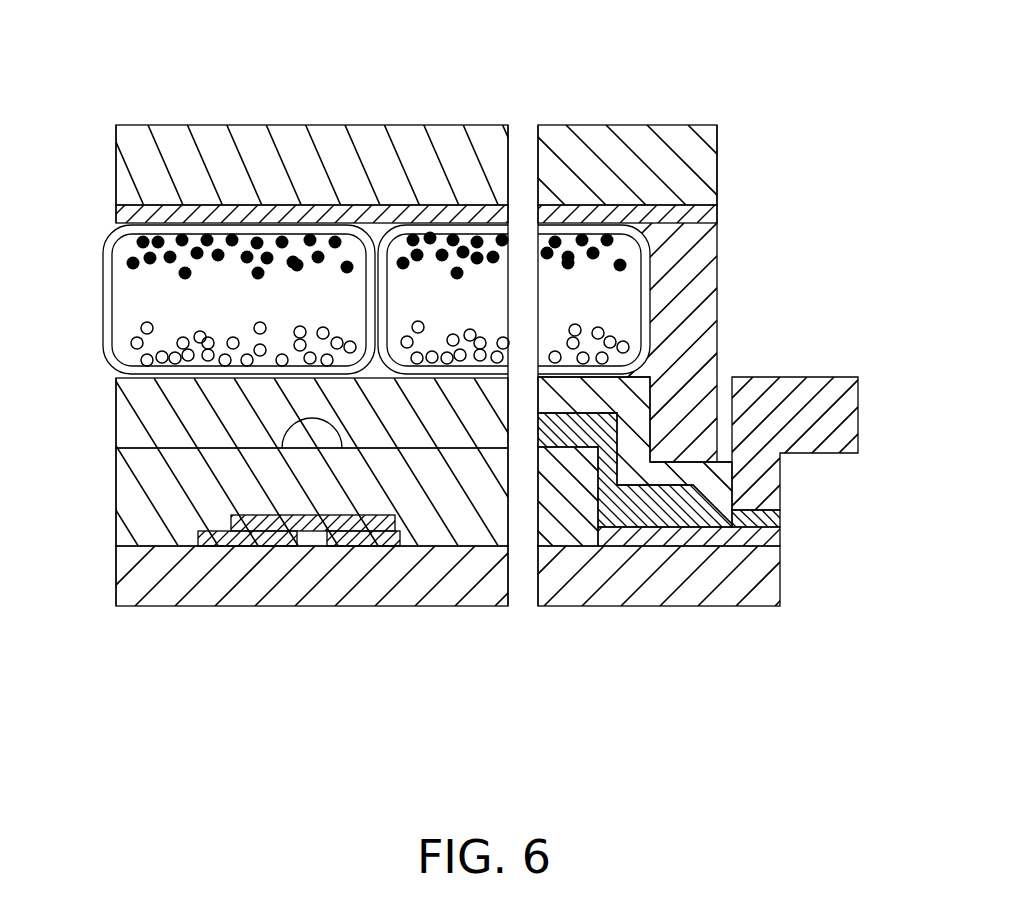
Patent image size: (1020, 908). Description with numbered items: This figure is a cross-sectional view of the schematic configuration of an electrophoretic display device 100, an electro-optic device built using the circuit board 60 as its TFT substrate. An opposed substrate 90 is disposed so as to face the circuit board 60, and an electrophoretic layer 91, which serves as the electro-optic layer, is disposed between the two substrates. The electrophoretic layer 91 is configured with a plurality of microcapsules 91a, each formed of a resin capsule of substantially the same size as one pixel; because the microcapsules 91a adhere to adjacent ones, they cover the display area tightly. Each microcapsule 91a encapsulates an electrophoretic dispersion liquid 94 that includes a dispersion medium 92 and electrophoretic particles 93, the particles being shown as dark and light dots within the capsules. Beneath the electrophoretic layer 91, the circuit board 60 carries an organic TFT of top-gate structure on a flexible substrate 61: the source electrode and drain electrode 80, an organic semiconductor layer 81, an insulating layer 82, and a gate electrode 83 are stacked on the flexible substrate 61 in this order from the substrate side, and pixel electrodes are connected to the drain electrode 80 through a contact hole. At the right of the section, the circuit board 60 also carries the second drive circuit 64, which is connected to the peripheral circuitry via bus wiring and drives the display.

The electrophoretic display device 100 is at (781, 89).
The opposed substrate 90 is at (722, 125).
The electrophoretic layer 91 is at (700, 252).
The microcapsule 91a is at (105, 263).
The electrophoretic dispersion liquid 94 is at (423, 198).
The dispersion medium 92 is at (402, 284).
The electrophoretic particles 93 is at (468, 240).
The second drive circuit 64 is at (794, 419).
The circuit board 60 is at (501, 493).
The gate electrode 83 is at (288, 428).
The organic semiconductor layer 81 is at (248, 516).
The insulating layer 82 is at (157, 530).
The source electrode and drain electrode 80 is at (372, 538).
The flexible substrate 61 is at (484, 599).